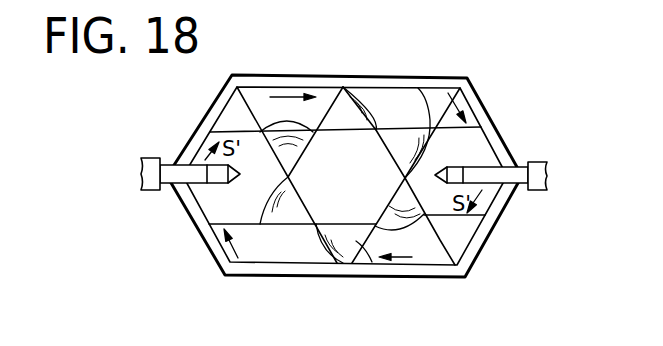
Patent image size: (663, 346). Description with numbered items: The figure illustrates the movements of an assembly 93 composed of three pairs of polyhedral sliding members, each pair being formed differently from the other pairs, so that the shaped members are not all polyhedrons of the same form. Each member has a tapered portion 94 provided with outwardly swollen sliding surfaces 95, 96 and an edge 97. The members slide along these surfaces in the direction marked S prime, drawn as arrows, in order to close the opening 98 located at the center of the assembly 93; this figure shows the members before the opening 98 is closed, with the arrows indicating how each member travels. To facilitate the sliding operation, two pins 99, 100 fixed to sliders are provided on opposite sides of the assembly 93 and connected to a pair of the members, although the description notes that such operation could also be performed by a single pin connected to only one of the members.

The assembly 93 is at (484, 75).
The tapered portion 94 is at (415, 227).
The sliding surface 95 is at (372, 262).
The sliding surface 96 is at (321, 235).
The edge 97 is at (405, 178).
The opening 98 is at (355, 165).
The pin 99 is at (172, 160).
The pin 100 is at (520, 173).